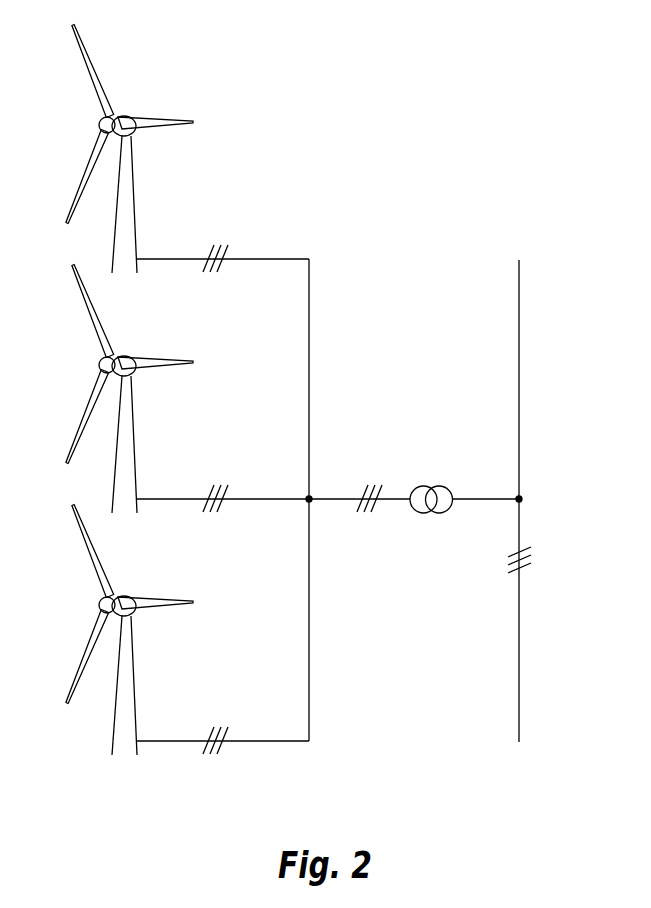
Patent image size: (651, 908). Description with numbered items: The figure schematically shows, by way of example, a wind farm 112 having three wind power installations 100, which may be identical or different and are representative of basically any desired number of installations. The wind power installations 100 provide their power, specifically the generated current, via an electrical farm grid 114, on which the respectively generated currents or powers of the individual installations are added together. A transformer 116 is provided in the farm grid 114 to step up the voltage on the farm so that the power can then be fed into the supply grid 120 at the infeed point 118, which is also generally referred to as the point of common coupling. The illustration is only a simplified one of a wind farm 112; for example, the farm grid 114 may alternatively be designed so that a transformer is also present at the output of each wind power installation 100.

The wind power installation 100 is at (128, 196).
The wind farm 112 is at (372, 117).
The electrical farm grid 114 is at (327, 497).
The transformer 116 is at (437, 468).
The infeed point 118 is at (534, 478).
The supply grid 120 is at (519, 283).